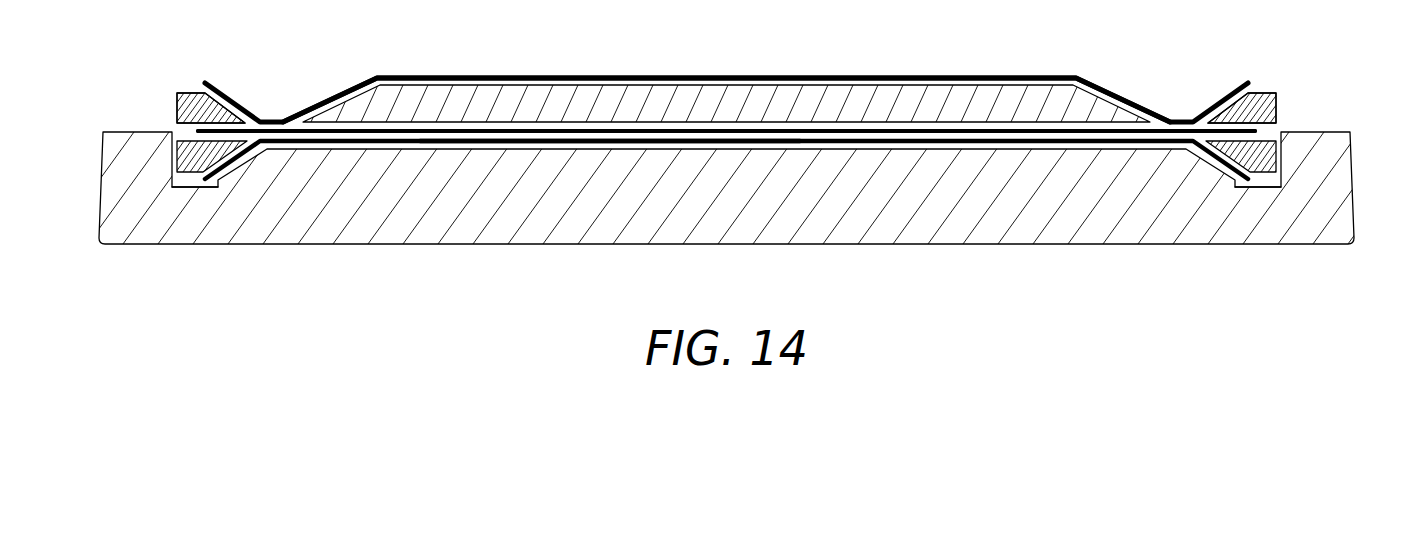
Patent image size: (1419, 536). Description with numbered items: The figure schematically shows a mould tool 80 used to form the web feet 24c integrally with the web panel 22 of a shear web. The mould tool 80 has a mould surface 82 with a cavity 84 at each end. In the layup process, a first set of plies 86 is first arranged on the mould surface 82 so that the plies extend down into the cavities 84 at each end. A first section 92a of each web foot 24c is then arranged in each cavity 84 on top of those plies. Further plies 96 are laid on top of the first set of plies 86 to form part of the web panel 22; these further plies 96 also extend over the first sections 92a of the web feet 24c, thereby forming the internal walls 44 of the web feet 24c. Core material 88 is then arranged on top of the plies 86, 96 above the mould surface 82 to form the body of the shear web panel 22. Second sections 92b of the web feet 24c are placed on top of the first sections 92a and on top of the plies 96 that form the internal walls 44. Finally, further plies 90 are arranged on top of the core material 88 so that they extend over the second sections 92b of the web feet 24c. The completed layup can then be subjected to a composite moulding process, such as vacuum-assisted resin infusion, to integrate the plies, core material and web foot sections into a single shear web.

The web panel 22 is at (1007, 92).
The web foot 24c is at (165, 93).
The internal wall 44 is at (229, 129).
The mould tool 80 is at (725, 233).
The mould surface 82 is at (508, 148).
The cavity 84 is at (188, 189).
The first set of plies 86 is at (605, 139).
The core material 88 is at (698, 105).
The further plies 90 is at (415, 83).
The first section of web foot 92a is at (187, 152).
The second section of web foot 92b is at (203, 100).
The further plies 96 is at (791, 130).